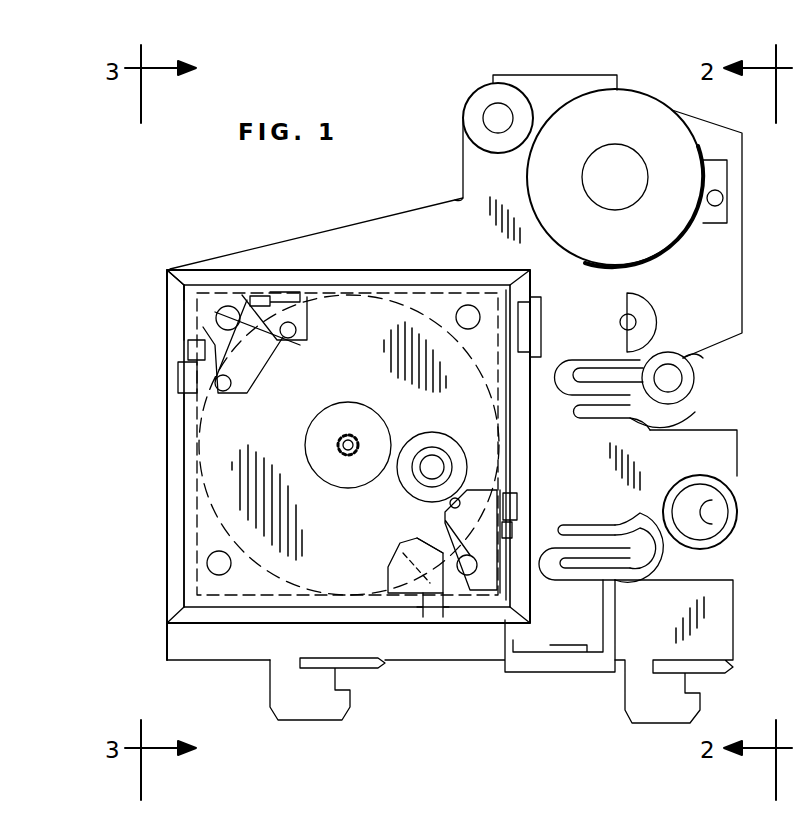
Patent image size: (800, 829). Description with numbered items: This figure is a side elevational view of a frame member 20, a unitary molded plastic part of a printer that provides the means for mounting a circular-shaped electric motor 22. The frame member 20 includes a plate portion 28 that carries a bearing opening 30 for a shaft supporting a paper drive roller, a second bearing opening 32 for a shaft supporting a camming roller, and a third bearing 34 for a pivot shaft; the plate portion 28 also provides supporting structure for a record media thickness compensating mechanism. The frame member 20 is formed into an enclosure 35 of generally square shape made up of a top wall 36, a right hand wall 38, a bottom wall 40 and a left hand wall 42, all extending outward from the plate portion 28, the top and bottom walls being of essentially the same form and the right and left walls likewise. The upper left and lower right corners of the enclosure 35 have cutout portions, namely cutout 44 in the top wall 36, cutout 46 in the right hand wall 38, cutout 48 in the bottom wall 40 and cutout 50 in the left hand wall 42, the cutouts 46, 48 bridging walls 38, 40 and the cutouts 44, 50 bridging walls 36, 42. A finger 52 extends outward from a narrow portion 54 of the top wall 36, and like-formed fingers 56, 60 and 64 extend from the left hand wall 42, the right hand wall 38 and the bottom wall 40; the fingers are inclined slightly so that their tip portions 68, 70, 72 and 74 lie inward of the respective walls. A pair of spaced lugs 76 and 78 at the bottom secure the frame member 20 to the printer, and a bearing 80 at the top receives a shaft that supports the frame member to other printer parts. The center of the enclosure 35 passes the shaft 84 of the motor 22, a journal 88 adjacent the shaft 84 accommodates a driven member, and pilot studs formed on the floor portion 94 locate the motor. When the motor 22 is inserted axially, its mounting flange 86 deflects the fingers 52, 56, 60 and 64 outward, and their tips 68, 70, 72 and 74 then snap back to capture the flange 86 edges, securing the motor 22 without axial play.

The frame member 20 is at (356, 198).
The electric motor 22 is at (205, 512).
The plate portion 28 is at (722, 290).
The bearing opening 30 is at (680, 365).
The second bearing opening 32 is at (668, 557).
The third bearing 34 is at (738, 520).
The enclosure 35 is at (148, 416).
The top wall 36 is at (395, 262).
The right hand wall 38 is at (531, 452).
The bottom wall 40 is at (405, 628).
The left hand wall 42 is at (167, 464).
The cutout portion 44 is at (298, 342).
The cutout portion 46 is at (448, 512).
The cutout portion 48 is at (390, 575).
The cutout portion 50 is at (225, 396).
The finger 52 is at (265, 290).
The narrow portion 54 is at (205, 278).
The finger 56 is at (190, 347).
The finger 60 is at (520, 518).
The finger 64 is at (436, 618).
The tip portion 68 is at (302, 320).
The tip portion 70 is at (236, 368).
The tip portion 72 is at (481, 506).
The tip portion 74 is at (418, 556).
The lug 76 is at (632, 690).
The lug 78 is at (275, 690).
The bearing 80 is at (486, 112).
The motor shaft 84 is at (357, 432).
The motor mounting flange 86 is at (186, 374).
The journal 88 is at (420, 468).
The floor portion 94 is at (360, 392).